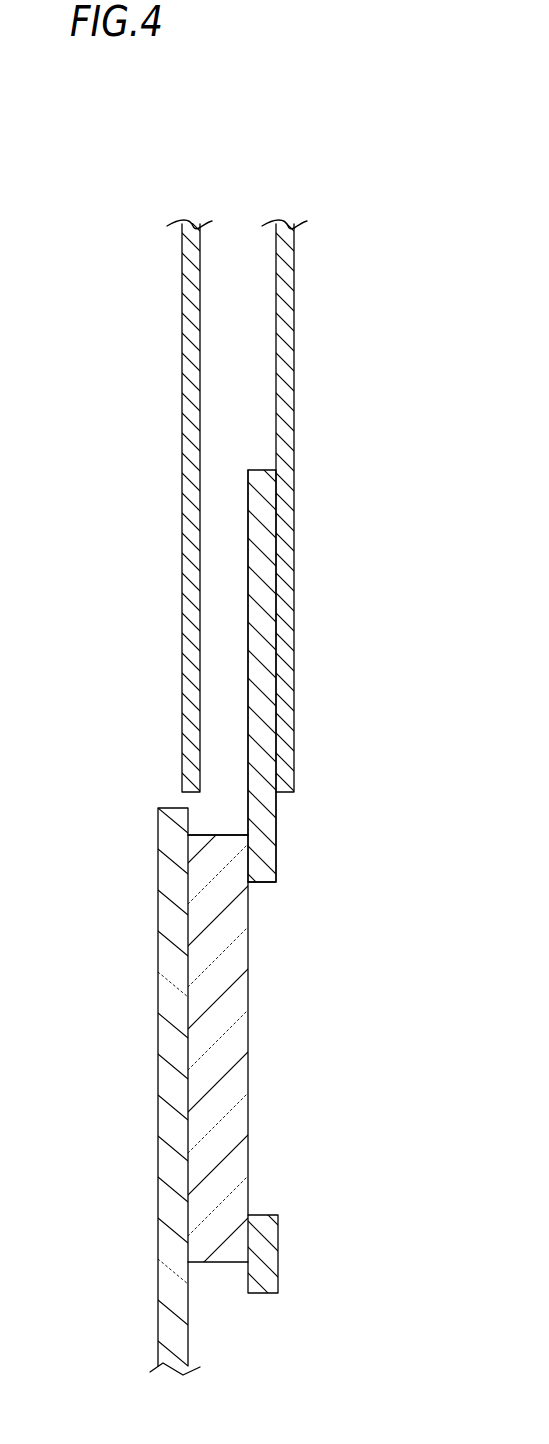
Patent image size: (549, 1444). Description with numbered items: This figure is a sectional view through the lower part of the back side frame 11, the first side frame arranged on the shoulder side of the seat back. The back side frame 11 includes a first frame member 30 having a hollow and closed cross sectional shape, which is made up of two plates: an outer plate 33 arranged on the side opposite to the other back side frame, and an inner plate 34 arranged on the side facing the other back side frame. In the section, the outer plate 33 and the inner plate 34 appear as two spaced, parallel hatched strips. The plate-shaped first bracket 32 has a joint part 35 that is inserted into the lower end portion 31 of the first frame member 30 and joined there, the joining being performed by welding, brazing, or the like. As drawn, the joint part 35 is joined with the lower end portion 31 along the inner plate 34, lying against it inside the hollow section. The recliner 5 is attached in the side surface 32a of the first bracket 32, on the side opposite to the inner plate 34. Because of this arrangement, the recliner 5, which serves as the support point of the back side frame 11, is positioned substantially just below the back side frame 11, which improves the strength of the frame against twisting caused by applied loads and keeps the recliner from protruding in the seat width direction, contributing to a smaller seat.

The recliner 5 is at (230, 1026).
The back side frame 11 is at (318, 308).
The first frame member 30 is at (277, 146).
The lower end portion 31 is at (294, 570).
The first bracket 32 is at (300, 852).
The side surface 32a is at (247, 726).
The outer plate 33 is at (182, 246).
The inner plate 34 is at (276, 246).
The joint part 35 is at (265, 653).